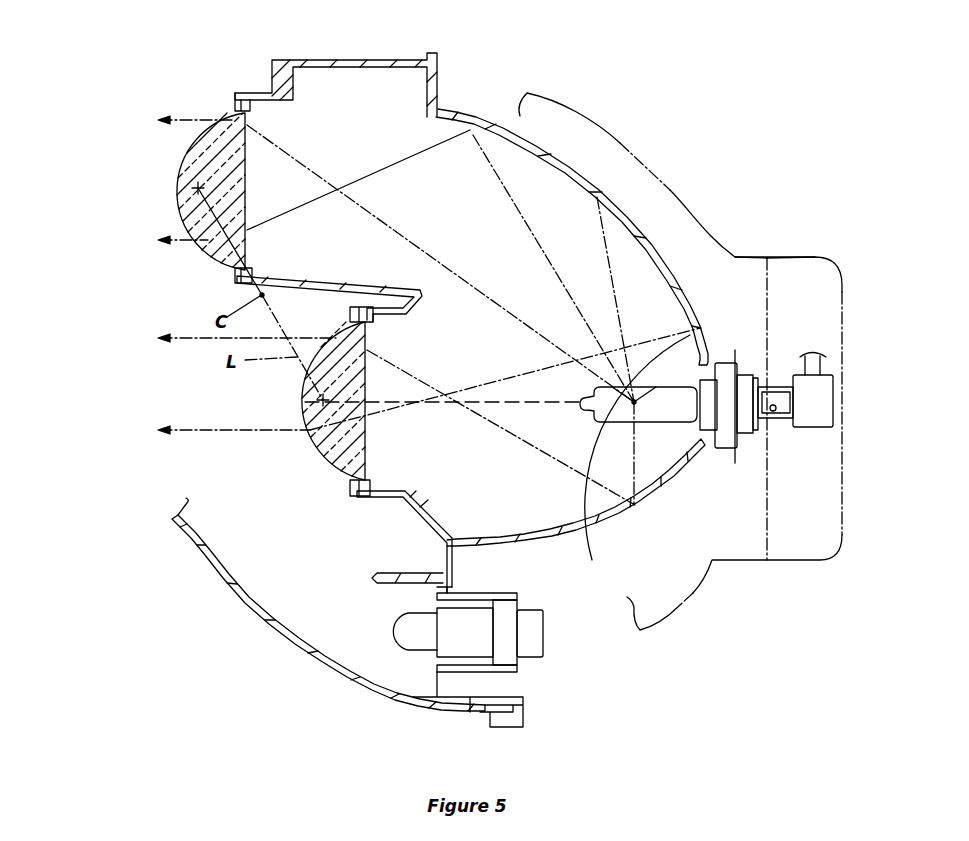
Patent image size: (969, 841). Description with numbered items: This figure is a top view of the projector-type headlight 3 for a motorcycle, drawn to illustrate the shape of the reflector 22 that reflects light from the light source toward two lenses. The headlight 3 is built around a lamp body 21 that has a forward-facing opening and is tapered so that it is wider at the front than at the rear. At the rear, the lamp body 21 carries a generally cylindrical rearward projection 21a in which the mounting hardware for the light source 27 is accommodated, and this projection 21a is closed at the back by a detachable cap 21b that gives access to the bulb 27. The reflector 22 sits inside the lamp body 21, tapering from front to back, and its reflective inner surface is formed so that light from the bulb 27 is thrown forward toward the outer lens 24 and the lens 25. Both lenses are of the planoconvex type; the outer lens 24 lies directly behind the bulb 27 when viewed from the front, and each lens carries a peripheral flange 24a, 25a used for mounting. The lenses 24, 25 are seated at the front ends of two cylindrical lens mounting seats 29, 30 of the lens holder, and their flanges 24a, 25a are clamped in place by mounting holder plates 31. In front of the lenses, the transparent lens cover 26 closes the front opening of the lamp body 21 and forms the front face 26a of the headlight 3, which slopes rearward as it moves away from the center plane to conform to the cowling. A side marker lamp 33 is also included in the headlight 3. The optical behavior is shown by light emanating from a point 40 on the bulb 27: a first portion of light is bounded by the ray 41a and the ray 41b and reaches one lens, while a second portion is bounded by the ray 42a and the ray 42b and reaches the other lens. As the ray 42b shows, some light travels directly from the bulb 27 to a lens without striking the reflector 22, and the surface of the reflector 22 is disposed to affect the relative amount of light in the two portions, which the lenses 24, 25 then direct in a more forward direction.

The headlight 3 is at (597, 105).
The lamp body 21 is at (670, 192).
The rearward projection 21a is at (747, 253).
The detachable cap 21b is at (803, 260).
The reflector 22 is at (470, 128).
The outer lens 24 is at (300, 417).
The flange 24a is at (357, 490).
The lens 25 is at (180, 170).
The flange 25a is at (238, 97).
The lens cover 26 is at (248, 597).
The front face 26a is at (193, 552).
The light source 27 is at (657, 420).
The lens mounting seat 29 is at (393, 497).
The lens mounting seat 30 is at (283, 59).
The mounting holder plate 31 is at (233, 280).
The side marker lamp 33 is at (400, 648).
The point 40 is at (633, 461).
The ray 41a is at (193, 338).
The ray 41b is at (193, 430).
The ray 42a is at (193, 240).
The ray 42b is at (193, 120).